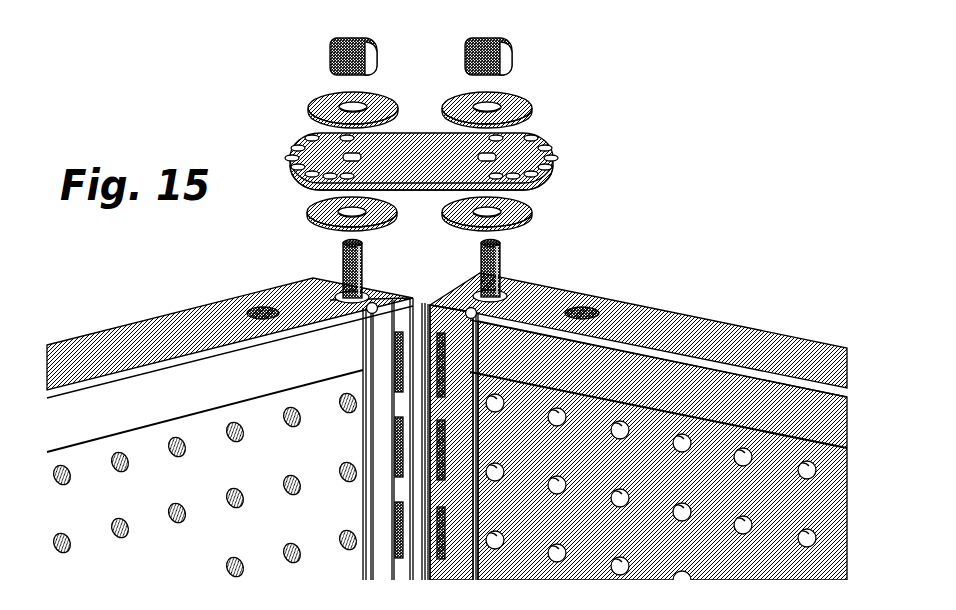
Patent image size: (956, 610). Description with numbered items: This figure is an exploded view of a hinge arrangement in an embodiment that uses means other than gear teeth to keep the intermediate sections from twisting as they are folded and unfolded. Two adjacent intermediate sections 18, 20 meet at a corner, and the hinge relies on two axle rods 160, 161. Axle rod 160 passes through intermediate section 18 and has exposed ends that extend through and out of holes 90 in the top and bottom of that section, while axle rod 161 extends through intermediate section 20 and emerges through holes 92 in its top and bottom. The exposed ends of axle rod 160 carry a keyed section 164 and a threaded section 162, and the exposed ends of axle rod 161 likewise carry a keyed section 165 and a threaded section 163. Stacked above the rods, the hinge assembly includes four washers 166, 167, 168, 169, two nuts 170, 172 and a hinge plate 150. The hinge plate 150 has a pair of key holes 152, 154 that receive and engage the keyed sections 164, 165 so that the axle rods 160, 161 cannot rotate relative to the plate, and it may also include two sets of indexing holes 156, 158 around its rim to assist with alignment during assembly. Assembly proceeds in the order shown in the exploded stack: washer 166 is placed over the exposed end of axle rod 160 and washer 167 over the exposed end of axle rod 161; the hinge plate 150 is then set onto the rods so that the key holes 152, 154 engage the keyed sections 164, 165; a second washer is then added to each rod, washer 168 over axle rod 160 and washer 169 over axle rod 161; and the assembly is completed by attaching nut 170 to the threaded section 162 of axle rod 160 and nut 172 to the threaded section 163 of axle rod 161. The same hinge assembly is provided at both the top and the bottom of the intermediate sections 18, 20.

The intermediate section 18 is at (232, 408).
The intermediate section 20 is at (634, 412).
The holes 90 is at (372, 284).
The holes 92 is at (468, 293).
The hinge plate 150 is at (453, 141).
The key hole 152 is at (312, 138).
The key hole 154 is at (530, 142).
The indexing holes 156 is at (294, 150).
The indexing holes 158 is at (548, 172).
The axle rod 160 is at (290, 266).
The axle rod 161 is at (596, 254).
The threaded section 162 is at (340, 267).
The threaded section 163 is at (499, 258).
The keyed section 164 is at (336, 282).
The keyed section 165 is at (500, 283).
The washer 166 is at (308, 214).
The washer 167 is at (532, 214).
The washer 168 is at (312, 112).
The washer 169 is at (534, 112).
The nut 170 is at (330, 54).
The nut 172 is at (514, 54).